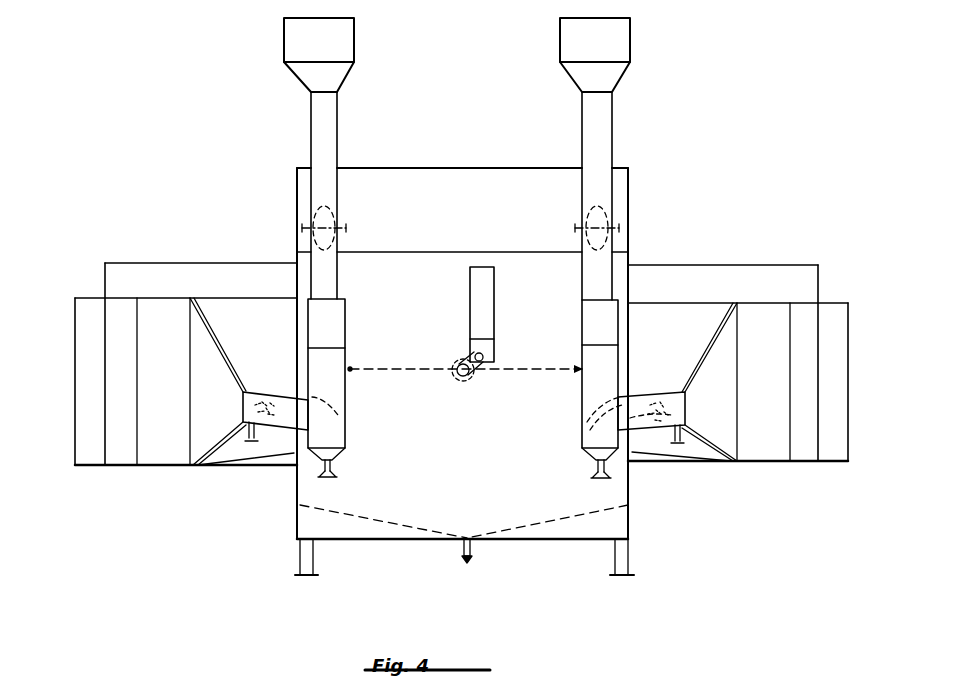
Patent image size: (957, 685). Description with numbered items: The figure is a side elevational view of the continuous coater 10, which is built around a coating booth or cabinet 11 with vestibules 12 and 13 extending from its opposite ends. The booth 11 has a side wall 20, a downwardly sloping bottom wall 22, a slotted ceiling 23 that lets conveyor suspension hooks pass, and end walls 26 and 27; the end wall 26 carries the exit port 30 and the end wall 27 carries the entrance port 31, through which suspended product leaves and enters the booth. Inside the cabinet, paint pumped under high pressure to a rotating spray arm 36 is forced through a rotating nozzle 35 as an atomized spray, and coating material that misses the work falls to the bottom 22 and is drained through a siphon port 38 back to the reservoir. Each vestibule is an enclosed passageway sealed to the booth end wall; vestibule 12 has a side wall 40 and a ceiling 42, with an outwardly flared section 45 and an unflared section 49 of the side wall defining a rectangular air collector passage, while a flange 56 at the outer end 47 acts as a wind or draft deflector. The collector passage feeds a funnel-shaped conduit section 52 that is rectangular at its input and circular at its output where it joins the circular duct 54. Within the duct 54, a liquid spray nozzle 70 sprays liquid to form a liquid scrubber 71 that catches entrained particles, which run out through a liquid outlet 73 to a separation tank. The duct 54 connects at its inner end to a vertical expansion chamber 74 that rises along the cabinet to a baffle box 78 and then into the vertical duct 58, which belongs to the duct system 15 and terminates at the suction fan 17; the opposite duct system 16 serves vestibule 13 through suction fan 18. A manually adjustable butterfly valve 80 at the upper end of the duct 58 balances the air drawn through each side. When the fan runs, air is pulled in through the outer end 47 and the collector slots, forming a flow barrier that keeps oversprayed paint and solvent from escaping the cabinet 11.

The coater 10 is at (314, 619).
The coating booth 11 is at (425, 507).
The vestibule 12 is at (766, 244).
The vestibule 13 is at (175, 229).
The duct system 15 is at (626, 120).
The duct system 16 is at (297, 122).
The suction fan 17 is at (613, 40).
The suction fan 18 is at (310, 38).
The side wall 20 is at (472, 458).
The bottom wall 22 is at (358, 517).
The ceiling 23 is at (492, 206).
The end wall 26 is at (630, 338).
The end wall 27 is at (297, 342).
The exit port 30 is at (645, 463).
The entrance port 31 is at (293, 455).
The rotating nozzle 35 is at (353, 362).
The rotating spray arm 36 is at (522, 376).
The siphon port 38 is at (474, 552).
The side wall 40 is at (696, 326).
The ceiling 42 is at (734, 296).
The outwardly flared section 45 is at (766, 450).
The outer end 47 is at (836, 472).
The unflared side wall section 49 is at (676, 379).
The funnel-shaped conduit section 52 is at (717, 462).
The circular duct 54 is at (682, 403).
The flange 56 is at (833, 313).
The duct 58 is at (600, 150).
The liquid spray nozzle 70 is at (690, 407).
The liquid scrubber 71 is at (600, 422).
The liquid outlet 73 is at (336, 470).
The expansion chamber 74 is at (598, 365).
The baffle box 78 is at (594, 318).
The butterfly valve 80 is at (620, 193).